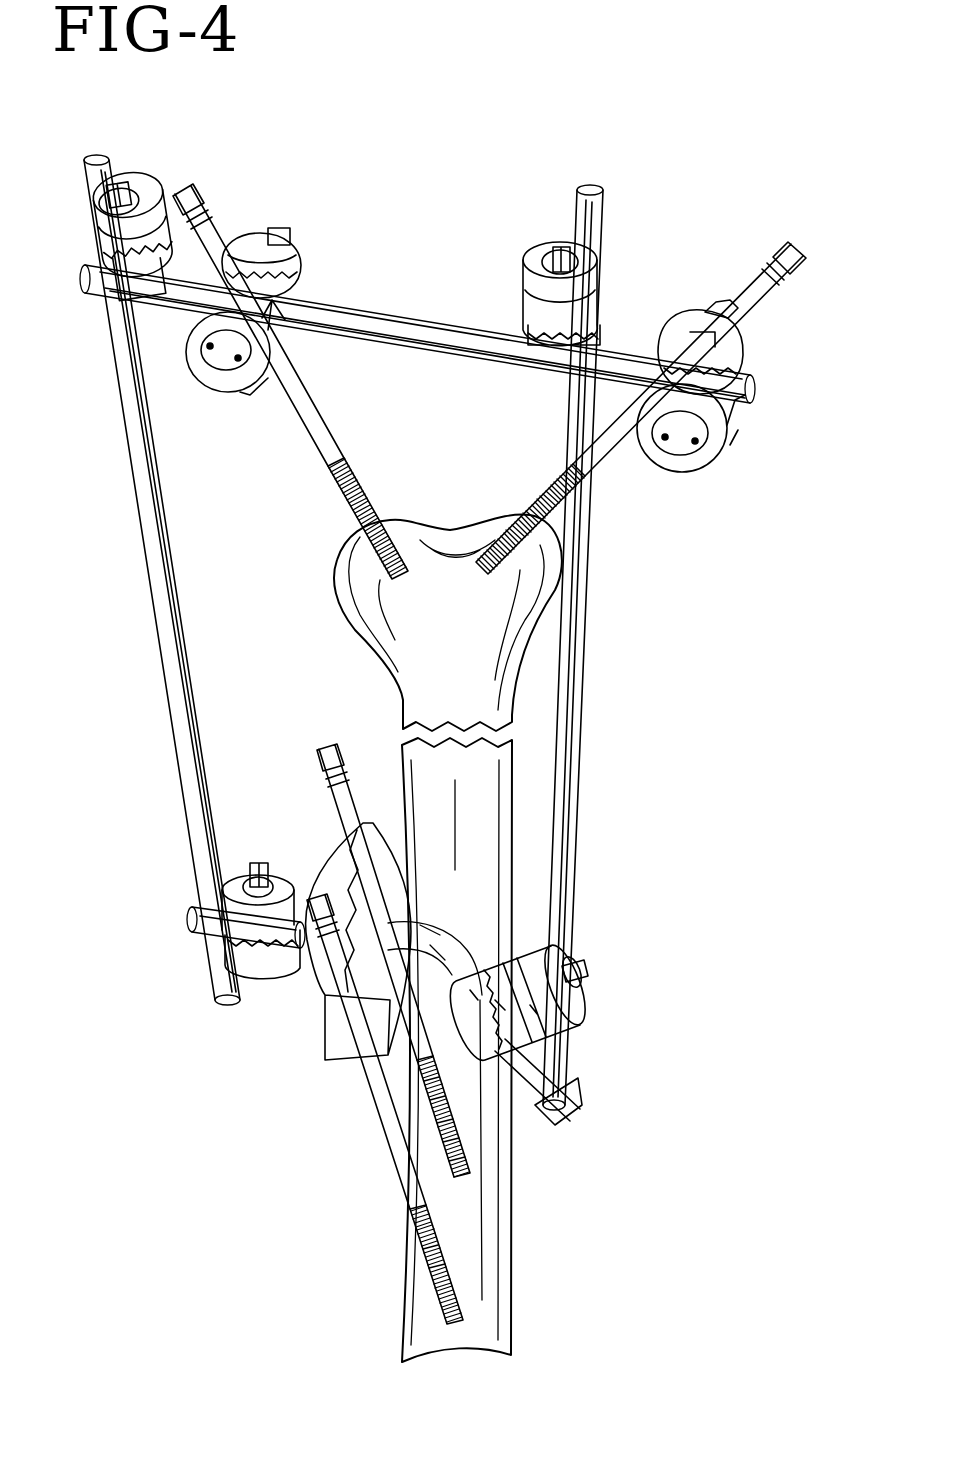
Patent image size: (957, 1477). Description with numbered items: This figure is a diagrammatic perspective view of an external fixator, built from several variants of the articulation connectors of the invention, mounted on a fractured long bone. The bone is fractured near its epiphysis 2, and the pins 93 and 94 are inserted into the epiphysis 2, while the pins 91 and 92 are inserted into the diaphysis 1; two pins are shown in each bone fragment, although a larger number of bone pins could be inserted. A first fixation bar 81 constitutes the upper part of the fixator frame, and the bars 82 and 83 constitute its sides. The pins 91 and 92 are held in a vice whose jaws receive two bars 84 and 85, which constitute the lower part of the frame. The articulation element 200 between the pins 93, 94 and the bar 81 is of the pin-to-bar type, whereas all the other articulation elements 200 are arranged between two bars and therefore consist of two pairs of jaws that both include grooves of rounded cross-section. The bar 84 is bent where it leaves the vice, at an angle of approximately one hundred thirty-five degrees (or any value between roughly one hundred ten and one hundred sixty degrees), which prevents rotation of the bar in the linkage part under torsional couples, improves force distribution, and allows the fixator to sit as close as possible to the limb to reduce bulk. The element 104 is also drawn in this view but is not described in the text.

The diaphysis 1 is at (472, 818).
The epiphysis 2 is at (487, 672).
The first fixation bar 81 is at (373, 325).
The bar 82 is at (162, 590).
The bar 83 is at (565, 860).
The bar 84 is at (187, 938).
The bar 85 is at (573, 1099).
The pin 91 is at (440, 1257).
The pin 92 is at (462, 1132).
The pin 93 is at (312, 432).
The pin 94 is at (610, 457).
The pin clamp plate 104 is at (337, 1038).
The articulation element 200 is at (148, 172).